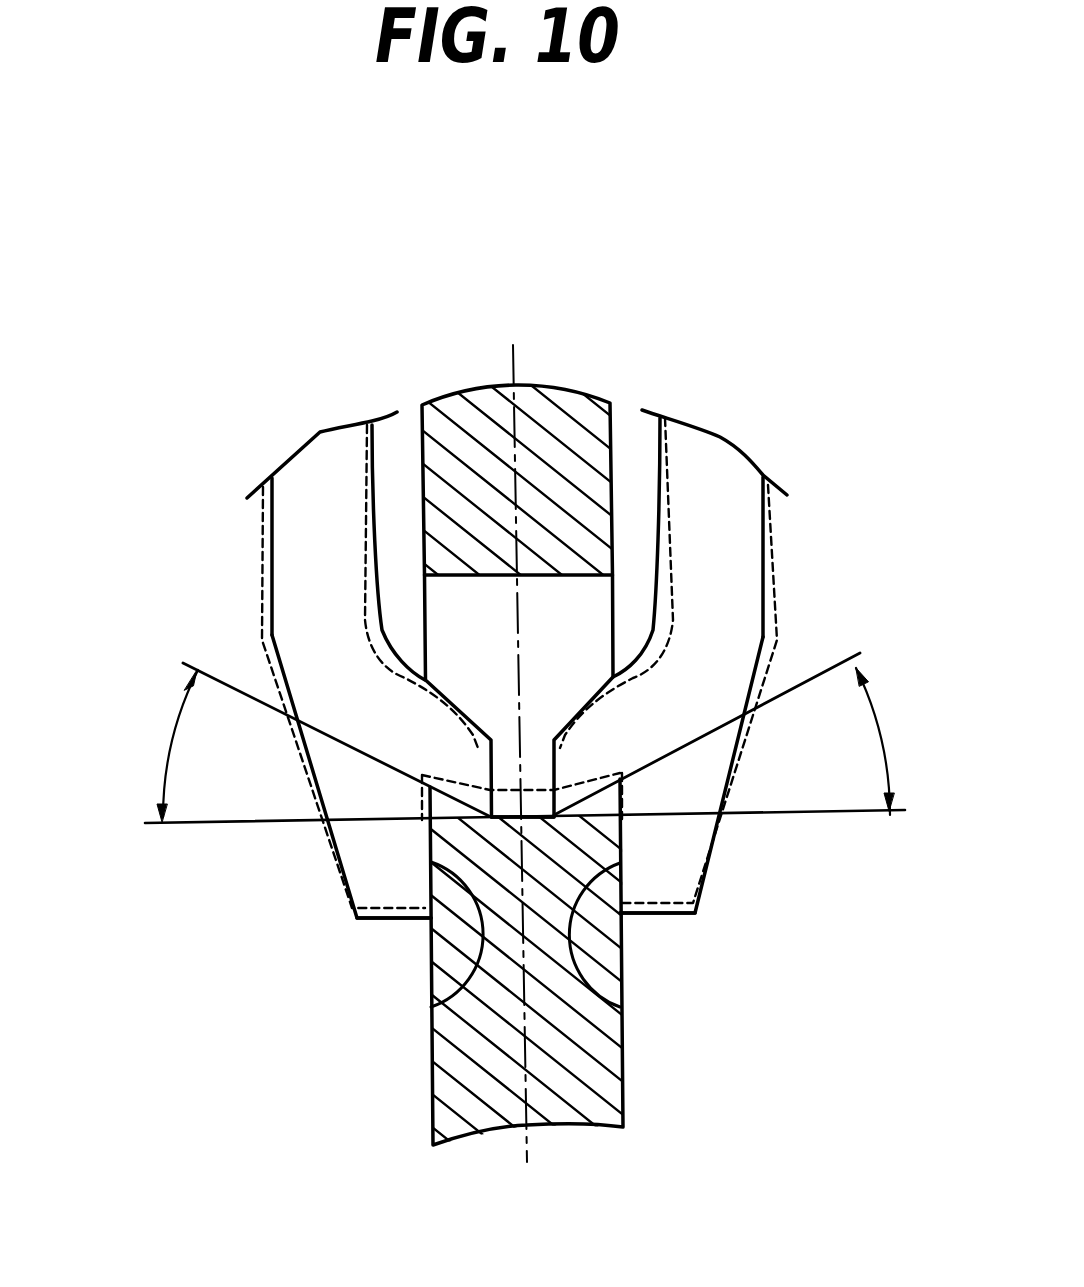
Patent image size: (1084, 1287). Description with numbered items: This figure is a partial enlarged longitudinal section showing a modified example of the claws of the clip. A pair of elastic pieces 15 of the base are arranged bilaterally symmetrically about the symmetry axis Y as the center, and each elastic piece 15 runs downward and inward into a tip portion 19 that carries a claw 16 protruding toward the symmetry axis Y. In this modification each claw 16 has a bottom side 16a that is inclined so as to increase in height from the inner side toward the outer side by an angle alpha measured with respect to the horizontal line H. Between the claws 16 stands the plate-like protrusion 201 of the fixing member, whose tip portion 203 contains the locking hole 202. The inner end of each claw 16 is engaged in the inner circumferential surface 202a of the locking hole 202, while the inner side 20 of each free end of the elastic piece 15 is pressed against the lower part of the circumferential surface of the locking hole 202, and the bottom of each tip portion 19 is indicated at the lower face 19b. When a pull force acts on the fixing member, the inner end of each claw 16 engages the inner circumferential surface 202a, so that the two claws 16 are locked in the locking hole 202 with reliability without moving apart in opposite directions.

The elastic piece 15 is at (330, 598).
The claw 16 is at (467, 758).
The bottom side 16a is at (470, 808).
The tip portion 19 is at (347, 837).
The bottom face of holding piece 19b is at (392, 923).
The inner side 20 is at (433, 1003).
The protrusion 201 is at (500, 513).
The locking hole 202 is at (537, 612).
The inner circumferential surface 202a is at (600, 815).
The tip portion 203 is at (543, 1050).
The horizontal line H is at (183, 828).
The symmetry axis Y is at (513, 348).
The inclination angle alpha is at (532, 745).